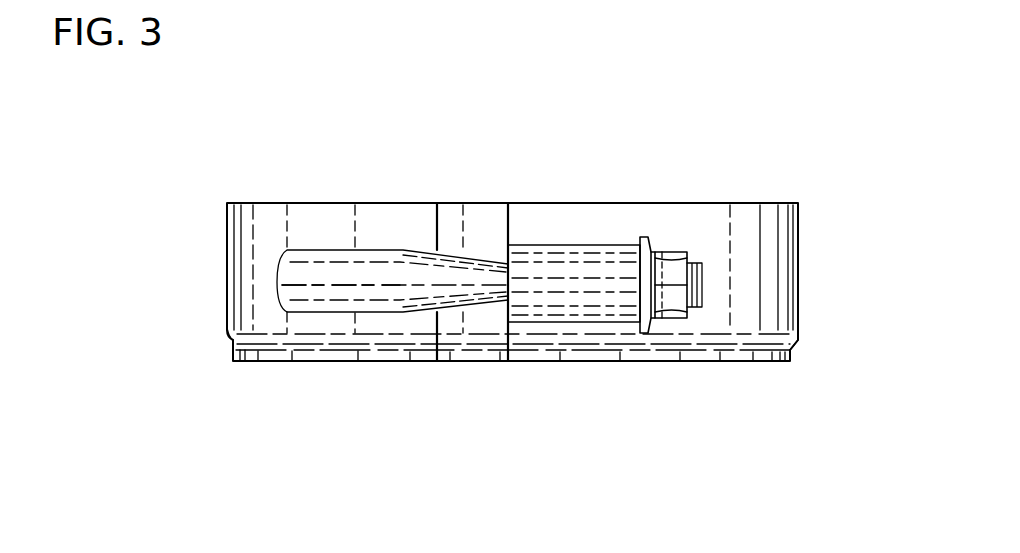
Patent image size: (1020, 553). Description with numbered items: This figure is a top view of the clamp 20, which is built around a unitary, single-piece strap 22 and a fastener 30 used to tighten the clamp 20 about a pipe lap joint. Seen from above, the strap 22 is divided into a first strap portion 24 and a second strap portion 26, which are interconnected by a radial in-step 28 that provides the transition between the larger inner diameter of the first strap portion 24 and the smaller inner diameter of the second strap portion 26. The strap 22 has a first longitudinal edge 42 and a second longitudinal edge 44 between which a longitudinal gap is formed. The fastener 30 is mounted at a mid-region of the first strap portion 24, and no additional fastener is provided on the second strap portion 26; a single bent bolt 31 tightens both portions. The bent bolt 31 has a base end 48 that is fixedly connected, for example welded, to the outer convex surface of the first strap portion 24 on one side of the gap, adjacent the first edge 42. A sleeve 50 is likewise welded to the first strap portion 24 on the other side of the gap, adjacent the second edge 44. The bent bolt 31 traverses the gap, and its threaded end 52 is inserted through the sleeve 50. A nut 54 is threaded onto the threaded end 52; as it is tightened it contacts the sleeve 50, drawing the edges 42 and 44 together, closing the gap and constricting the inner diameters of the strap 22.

The clamp 20 is at (610, 108).
The strap 22 is at (780, 182).
The first strap portion 24 is at (243, 259).
The second strap portion 26 is at (232, 352).
The radial in-step 28 is at (797, 345).
The fastener 30 is at (478, 236).
The bent bolt 31 is at (342, 296).
The first longitudinal edge 42 is at (402, 203).
The second longitudinal edge 44 is at (532, 203).
The base end 48 is at (332, 258).
The sleeve 50 is at (594, 262).
The threaded end 52 is at (699, 305).
The nut 54 is at (668, 258).